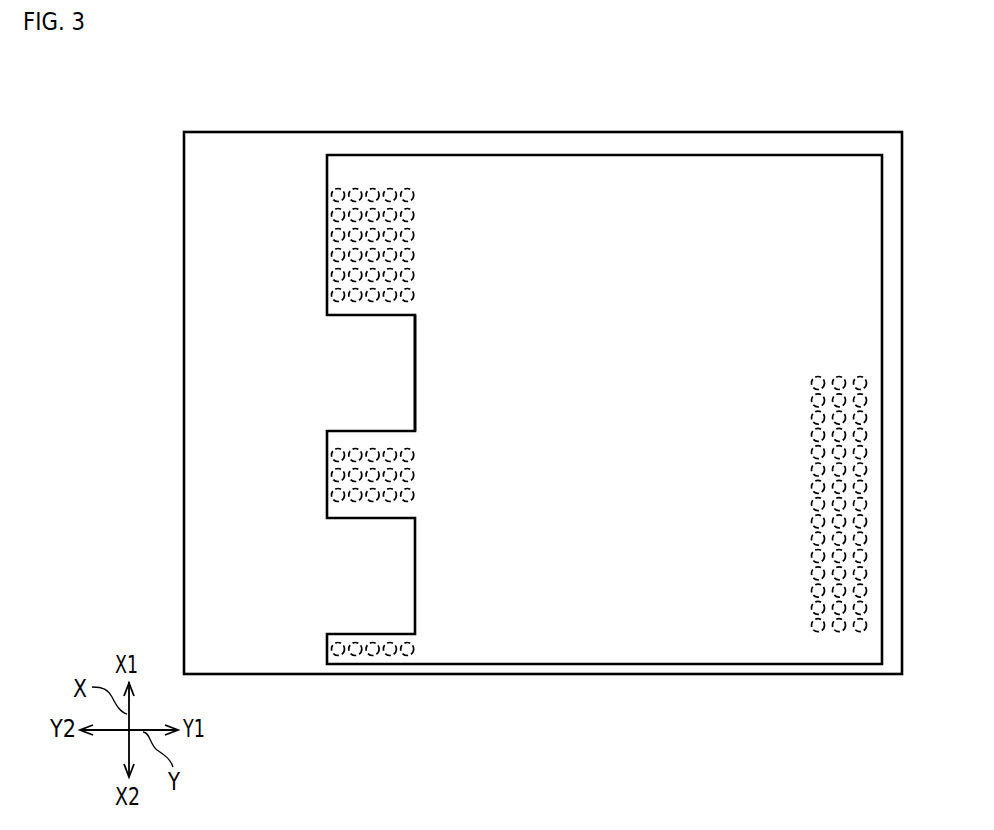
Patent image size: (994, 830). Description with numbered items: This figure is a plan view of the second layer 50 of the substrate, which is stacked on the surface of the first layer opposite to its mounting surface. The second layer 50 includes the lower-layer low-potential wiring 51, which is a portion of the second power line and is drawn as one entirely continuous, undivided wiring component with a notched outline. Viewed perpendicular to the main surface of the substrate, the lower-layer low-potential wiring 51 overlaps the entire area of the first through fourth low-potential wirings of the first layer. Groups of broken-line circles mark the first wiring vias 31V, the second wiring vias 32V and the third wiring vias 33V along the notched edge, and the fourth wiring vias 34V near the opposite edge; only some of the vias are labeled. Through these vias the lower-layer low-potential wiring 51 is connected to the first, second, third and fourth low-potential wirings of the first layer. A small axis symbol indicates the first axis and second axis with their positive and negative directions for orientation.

The second layer 50 is at (193, 131).
The lower-layer low-potential wiring 51 is at (415, 372).
The first wiring vias 31V is at (414, 234).
The second wiring vias 32V is at (414, 649).
The third wiring vias 33V is at (414, 475).
The fourth wiring vias 34V is at (812, 487).